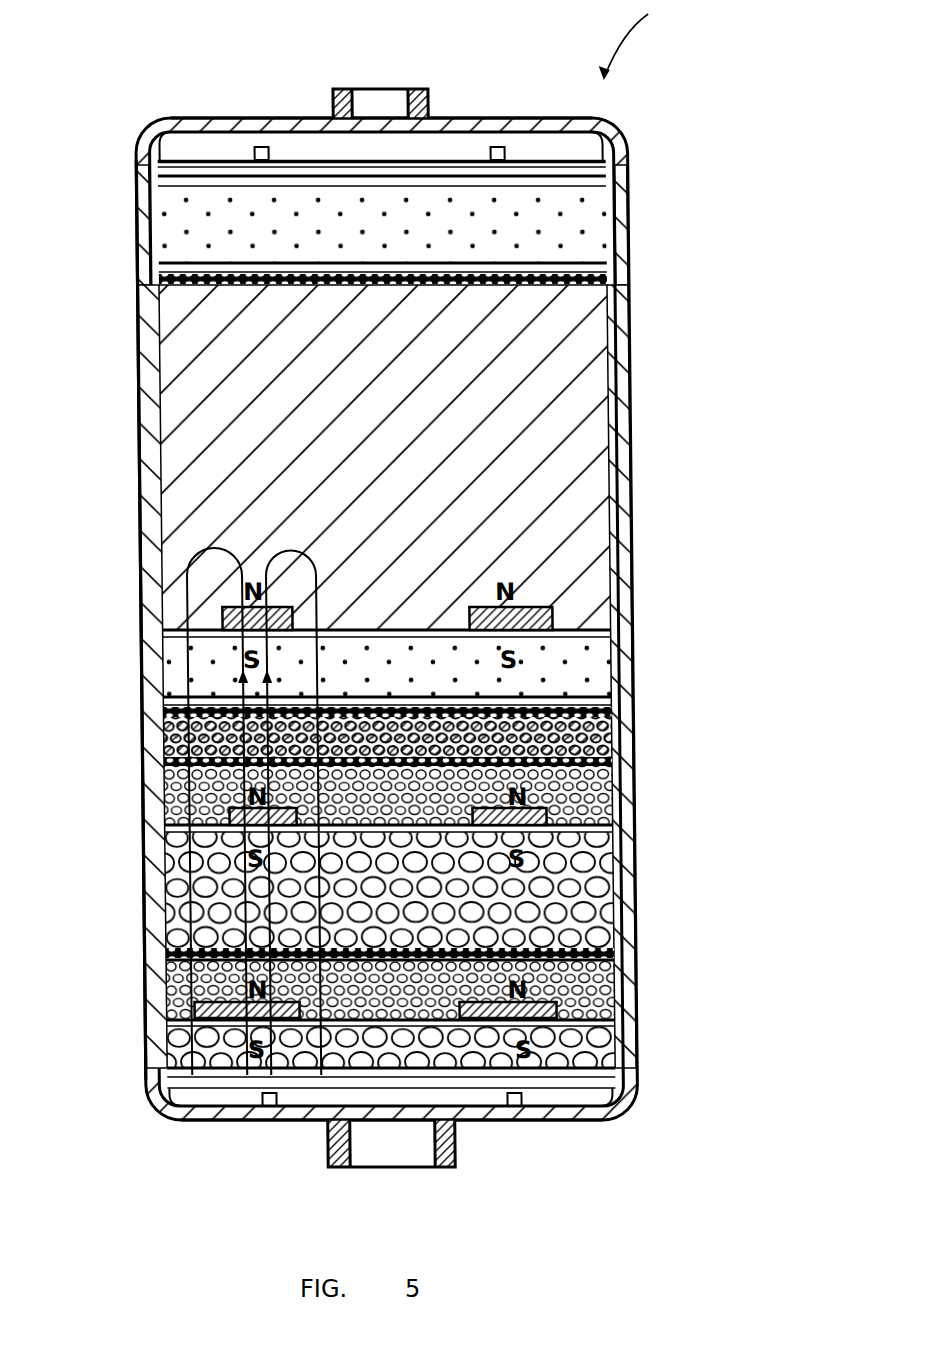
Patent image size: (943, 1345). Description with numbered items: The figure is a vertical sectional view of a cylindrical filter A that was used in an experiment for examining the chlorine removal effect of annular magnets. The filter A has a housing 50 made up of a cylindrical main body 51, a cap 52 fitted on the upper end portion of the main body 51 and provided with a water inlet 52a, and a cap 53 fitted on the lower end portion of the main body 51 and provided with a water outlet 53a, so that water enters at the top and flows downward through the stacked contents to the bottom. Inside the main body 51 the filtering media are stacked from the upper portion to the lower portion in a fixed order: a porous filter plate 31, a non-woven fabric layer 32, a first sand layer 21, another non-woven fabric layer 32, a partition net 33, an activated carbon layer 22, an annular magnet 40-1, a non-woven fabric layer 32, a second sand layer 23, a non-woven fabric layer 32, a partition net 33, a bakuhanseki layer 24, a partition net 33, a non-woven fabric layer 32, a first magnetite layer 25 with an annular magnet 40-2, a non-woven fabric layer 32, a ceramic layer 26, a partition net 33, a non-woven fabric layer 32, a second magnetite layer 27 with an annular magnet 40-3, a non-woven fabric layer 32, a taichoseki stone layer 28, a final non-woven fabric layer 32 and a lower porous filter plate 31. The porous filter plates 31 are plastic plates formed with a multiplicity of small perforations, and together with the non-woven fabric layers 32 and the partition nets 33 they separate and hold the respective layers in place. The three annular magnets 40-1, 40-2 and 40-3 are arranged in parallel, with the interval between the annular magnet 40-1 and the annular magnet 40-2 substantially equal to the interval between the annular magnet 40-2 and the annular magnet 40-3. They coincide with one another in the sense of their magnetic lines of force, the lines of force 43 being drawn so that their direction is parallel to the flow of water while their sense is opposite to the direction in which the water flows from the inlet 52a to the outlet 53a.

The filter A is at (638, 40).
The first sand layer 21 is at (635, 187).
The activated carbon layer 22 is at (636, 620).
The second sand layer 23 is at (633, 641).
The bakuhanseki layer 24 is at (632, 714).
The first magnetite layer 25 is at (632, 764).
The ceramic layer 26 is at (631, 836).
The second magnetite layer 27 is at (628, 960).
The taichoseki stone layer 28 is at (627, 1025).
The porous filter plate 31 is at (605, 163).
The non-woven fabric layer 32 is at (620, 178).
The partition net 33 is at (157, 277).
The annular magnet 40-1 is at (191, 617).
The annular magnet 40-2 is at (155, 808).
The annular magnet 40-3 is at (153, 1003).
The magnetic flux lines 43 is at (160, 918).
The housing 50 is at (134, 366).
The cylindrical main body 51 is at (143, 468).
The cap 52 is at (499, 118).
The water inlet 52a is at (369, 100).
The cap 53 is at (556, 1122).
The water outlet 53a is at (401, 1160).